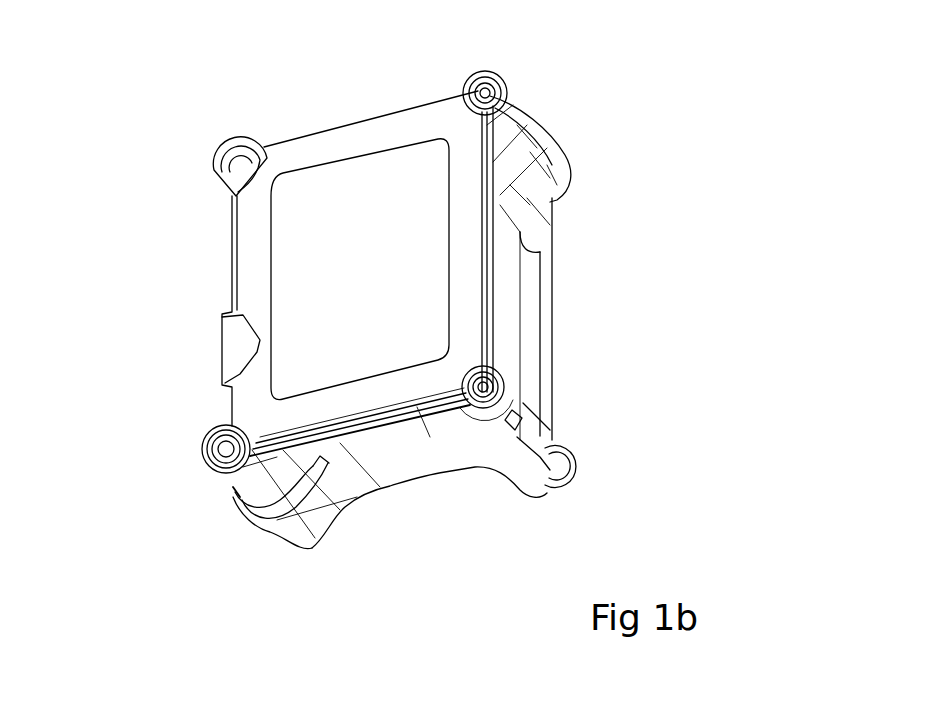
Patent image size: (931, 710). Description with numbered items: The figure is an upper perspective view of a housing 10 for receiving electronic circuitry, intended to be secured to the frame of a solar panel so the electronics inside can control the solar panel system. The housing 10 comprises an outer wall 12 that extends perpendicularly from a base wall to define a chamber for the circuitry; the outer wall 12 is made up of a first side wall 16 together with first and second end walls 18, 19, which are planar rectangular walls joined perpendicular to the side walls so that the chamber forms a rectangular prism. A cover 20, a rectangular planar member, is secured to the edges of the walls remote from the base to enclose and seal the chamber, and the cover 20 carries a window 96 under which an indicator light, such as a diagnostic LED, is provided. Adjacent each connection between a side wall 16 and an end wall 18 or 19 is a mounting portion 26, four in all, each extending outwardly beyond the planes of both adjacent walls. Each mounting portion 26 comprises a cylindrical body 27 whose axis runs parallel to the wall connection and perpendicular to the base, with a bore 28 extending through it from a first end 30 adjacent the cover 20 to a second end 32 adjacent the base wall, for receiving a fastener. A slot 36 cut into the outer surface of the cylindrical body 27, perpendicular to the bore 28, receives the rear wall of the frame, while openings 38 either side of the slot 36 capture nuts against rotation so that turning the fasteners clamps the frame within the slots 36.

The housing 10 is at (158, 139).
The outer wall 12 is at (418, 455).
The first side wall 16 is at (513, 288).
The first end wall 18 is at (384, 455).
The second end wall 19 is at (340, 122).
The cover 20 is at (316, 197).
The mounting portion 26 is at (215, 172).
The cylindrical body 27 is at (218, 152).
The bore 28 is at (483, 100).
The first end 30 is at (450, 392).
The second end 32 is at (575, 454).
The slot 36 is at (257, 517).
The opening 38 is at (550, 157).
The window 96 is at (232, 355).